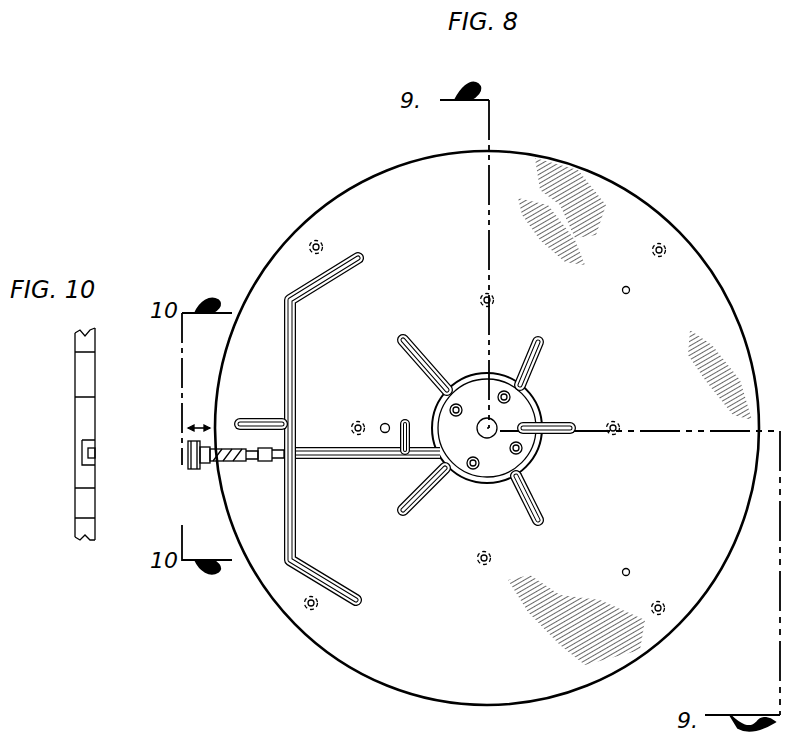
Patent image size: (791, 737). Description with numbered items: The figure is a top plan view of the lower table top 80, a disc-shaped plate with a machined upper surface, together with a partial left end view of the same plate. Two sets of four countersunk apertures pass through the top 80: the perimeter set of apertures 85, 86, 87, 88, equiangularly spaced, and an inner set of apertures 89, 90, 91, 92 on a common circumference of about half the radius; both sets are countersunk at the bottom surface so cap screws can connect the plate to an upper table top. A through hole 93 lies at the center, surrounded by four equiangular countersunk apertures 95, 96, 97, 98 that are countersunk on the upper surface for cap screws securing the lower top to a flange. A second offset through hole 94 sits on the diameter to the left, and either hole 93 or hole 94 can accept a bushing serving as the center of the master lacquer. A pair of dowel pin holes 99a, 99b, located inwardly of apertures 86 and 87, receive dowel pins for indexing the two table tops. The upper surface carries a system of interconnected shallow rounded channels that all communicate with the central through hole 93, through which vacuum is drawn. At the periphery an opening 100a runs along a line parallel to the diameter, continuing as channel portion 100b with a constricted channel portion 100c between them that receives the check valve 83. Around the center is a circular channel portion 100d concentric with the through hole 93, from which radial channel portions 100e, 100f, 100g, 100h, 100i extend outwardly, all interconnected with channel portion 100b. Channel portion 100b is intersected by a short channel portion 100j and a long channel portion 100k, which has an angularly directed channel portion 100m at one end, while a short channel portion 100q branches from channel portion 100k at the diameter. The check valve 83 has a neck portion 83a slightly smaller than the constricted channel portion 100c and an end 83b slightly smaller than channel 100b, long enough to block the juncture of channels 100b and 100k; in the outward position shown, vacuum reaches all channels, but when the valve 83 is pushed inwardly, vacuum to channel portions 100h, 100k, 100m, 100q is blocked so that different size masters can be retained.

In FIG. 8, the lower table top 80 is at (598, 170).
In FIG. 10, the lower table top 80 is at (97, 388).
In FIG. 8, the check valve 83 is at (188, 452).
In FIG. 8, the neck portion 83a is at (222, 445).
In FIG. 8, the end of valve 83b is at (277, 452).
In FIG. 8, the countersunk aperture 85 is at (304, 603).
In FIG. 8, the countersunk aperture 86 is at (665, 609).
In FIG. 8, the countersunk aperture 87 is at (660, 243).
In FIG. 8, the countersunk aperture 88 is at (314, 240).
In FIG. 8, the countersunk aperture 89 is at (481, 565).
In FIG. 8, the countersunk aperture 90 is at (616, 422).
In FIG. 8, the countersunk aperture 91 is at (489, 293).
In FIG. 8, the countersunk aperture 92 is at (354, 424).
In FIG. 8, the through hole 93 is at (497, 428).
In FIG. 8, the offset through hole 94 is at (383, 423).
In FIG. 8, the countersunk aperture 95 is at (477, 469).
In FIG. 8, the countersunk aperture 96 is at (522, 449).
In FIG. 8, the countersunk aperture 97 is at (504, 391).
In FIG. 8, the countersunk aperture 98 is at (452, 408).
In FIG. 8, the dowel pin hole 99a is at (629, 569).
In FIG. 8, the dowel pin hole 99b is at (628, 294).
In FIG. 8, the opening 100a is at (212, 458).
In FIG. 10, the opening 100a is at (95, 460).
In FIG. 8, the channel portion 100b is at (338, 460).
In FIG. 8, the constricted channel portion 100c is at (254, 461).
In FIG. 10, the constricted channel portion 100c is at (90, 455).
In FIG. 8, the circular channel portion 100d is at (458, 380).
In FIG. 8, the channel portion 100e is at (406, 336).
In FIG. 8, the channel portion 100f is at (425, 505).
In FIG. 8, the channel portion 100g is at (542, 512).
In FIG. 8, the channel portion 100h is at (562, 428).
In FIG. 8, the channel portion 100i is at (539, 338).
In FIG. 8, the short channel portion 100j is at (404, 452).
In FIG. 8, the long channel portion 100k is at (296, 352).
In FIG. 8, the angularly directed channel portion 100m is at (355, 262).
In FIG. 8, the short channel portion 100q is at (262, 418).